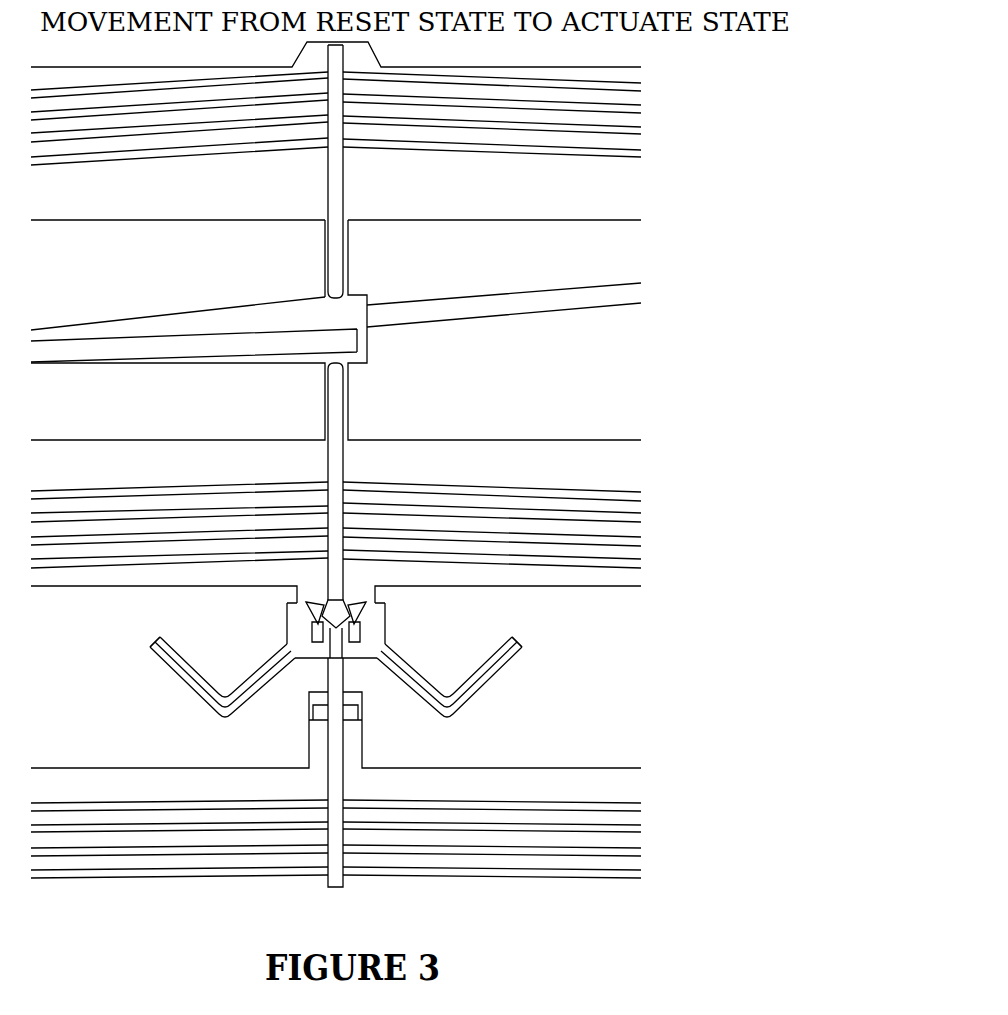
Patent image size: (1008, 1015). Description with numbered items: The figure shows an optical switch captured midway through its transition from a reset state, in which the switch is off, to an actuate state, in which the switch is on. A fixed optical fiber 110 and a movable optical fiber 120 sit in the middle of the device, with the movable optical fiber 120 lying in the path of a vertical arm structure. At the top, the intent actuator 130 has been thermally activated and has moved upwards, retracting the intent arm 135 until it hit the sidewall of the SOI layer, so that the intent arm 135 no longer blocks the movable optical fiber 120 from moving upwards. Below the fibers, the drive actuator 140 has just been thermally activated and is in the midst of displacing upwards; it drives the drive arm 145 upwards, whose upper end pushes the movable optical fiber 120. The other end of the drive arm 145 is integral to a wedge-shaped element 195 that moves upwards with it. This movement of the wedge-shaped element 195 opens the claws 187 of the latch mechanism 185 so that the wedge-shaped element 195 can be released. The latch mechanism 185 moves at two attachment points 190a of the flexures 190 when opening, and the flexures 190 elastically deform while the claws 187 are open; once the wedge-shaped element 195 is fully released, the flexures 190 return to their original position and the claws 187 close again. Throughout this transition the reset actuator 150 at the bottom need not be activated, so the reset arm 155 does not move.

The fixed optical fiber 110 is at (633, 295).
The movable optical fiber 120 is at (283, 352).
The intent actuator 130 is at (657, 107).
The intent arm 135 is at (346, 192).
The drive actuator 140 is at (659, 538).
The drive arm 145 is at (346, 458).
The reset actuator 150 is at (657, 845).
The reset arm 155 is at (345, 740).
The latch mechanism 185 is at (287, 695).
The claws 187 is at (352, 618).
The flexures 190 is at (482, 692).
The attachment points 190a is at (118, 660).
The wedge-shaped element 195 is at (325, 617).